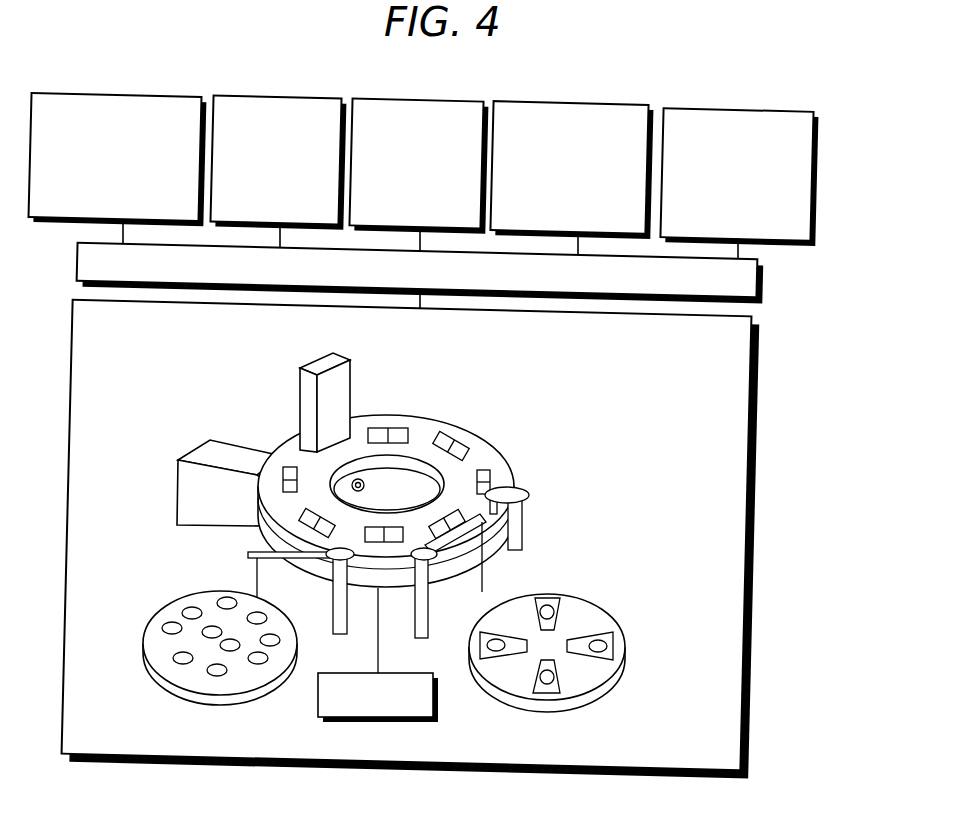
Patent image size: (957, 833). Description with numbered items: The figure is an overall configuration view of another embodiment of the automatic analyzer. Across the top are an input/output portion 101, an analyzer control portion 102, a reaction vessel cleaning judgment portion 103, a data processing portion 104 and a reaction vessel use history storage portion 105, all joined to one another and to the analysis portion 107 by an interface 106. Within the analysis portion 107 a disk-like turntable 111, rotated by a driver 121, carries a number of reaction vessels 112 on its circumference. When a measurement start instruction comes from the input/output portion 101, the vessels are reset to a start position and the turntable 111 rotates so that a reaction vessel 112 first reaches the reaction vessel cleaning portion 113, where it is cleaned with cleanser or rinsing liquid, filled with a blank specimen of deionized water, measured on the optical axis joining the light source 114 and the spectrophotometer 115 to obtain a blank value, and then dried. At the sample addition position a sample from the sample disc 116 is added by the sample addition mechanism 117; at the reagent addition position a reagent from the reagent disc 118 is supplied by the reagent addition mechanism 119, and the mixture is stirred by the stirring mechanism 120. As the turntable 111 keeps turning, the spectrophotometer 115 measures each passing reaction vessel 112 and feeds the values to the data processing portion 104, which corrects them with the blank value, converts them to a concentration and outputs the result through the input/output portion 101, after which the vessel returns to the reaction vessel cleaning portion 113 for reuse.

The input/output portion 101 is at (147, 92).
The analyzer control portion 102 is at (277, 95).
The reaction vessel cleaning judgment portion 103 is at (442, 99).
The data processing portion 104 is at (606, 104).
The reaction vessel use history storage portion 105 is at (769, 110).
The interface 106 is at (764, 284).
The analysis portion 107 is at (203, 769).
The turntable 111 is at (465, 432).
The reaction vessel 112 is at (300, 530).
The reaction vessel cleaning portion 113 is at (299, 426).
The light source 114 is at (368, 486).
The spectrophotometer 115 is at (178, 487).
The sample disc 116 is at (246, 704).
The sample addition mechanism 117 is at (248, 556).
The reagent disc 118 is at (597, 606).
The reagent addition mechanism 119 is at (426, 630).
The stirring mechanism 120 is at (526, 510).
The driver 121 is at (437, 707).